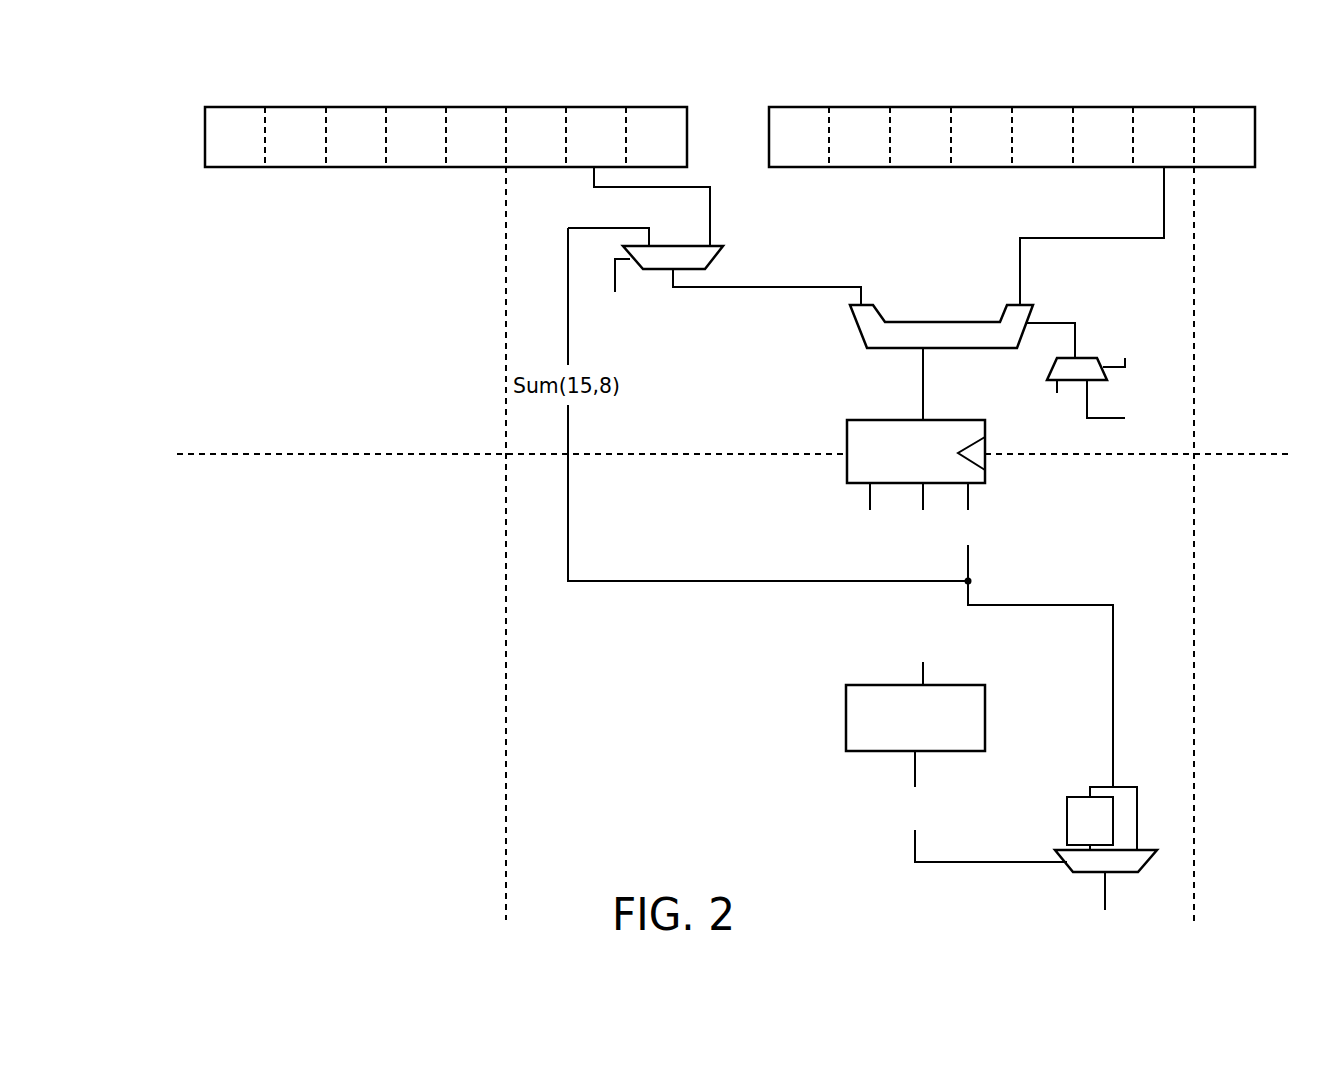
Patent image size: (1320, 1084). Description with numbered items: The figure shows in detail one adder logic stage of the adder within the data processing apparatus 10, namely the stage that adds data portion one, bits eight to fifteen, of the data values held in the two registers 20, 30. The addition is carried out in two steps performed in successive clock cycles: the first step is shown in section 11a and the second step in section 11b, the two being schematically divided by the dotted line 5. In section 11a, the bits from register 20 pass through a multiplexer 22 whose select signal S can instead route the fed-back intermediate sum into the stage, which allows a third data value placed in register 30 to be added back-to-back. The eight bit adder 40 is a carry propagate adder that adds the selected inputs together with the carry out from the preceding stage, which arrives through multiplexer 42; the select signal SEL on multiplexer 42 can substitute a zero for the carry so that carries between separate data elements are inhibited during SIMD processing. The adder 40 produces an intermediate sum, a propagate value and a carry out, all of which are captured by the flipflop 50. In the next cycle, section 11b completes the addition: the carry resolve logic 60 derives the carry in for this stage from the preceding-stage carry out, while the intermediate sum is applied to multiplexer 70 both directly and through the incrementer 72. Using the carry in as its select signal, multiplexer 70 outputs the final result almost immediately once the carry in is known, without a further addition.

The data processing apparatus 10 is at (157, 775).
The dotted line 5 is at (270, 456).
The section 11a is at (326, 369).
The section 11b is at (321, 687).
The register 20 is at (666, 106).
The register 30 is at (1234, 104).
The multiplexer 22 is at (718, 262).
The 8 bit adder 40 is at (879, 313).
The multiplexer 42 is at (1088, 357).
The flipflop 50 is at (947, 418).
The carry resolve logic 60 is at (846, 720).
The multiplexer 70 is at (1152, 862).
The incrementer 72 is at (1115, 826).